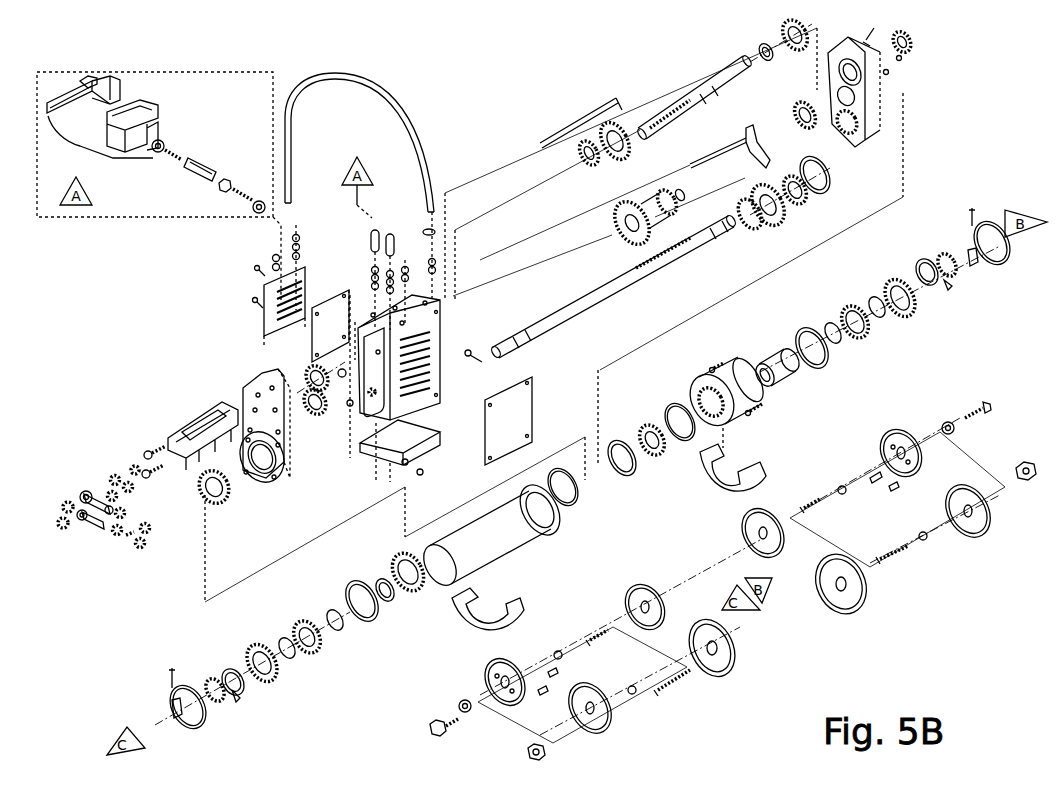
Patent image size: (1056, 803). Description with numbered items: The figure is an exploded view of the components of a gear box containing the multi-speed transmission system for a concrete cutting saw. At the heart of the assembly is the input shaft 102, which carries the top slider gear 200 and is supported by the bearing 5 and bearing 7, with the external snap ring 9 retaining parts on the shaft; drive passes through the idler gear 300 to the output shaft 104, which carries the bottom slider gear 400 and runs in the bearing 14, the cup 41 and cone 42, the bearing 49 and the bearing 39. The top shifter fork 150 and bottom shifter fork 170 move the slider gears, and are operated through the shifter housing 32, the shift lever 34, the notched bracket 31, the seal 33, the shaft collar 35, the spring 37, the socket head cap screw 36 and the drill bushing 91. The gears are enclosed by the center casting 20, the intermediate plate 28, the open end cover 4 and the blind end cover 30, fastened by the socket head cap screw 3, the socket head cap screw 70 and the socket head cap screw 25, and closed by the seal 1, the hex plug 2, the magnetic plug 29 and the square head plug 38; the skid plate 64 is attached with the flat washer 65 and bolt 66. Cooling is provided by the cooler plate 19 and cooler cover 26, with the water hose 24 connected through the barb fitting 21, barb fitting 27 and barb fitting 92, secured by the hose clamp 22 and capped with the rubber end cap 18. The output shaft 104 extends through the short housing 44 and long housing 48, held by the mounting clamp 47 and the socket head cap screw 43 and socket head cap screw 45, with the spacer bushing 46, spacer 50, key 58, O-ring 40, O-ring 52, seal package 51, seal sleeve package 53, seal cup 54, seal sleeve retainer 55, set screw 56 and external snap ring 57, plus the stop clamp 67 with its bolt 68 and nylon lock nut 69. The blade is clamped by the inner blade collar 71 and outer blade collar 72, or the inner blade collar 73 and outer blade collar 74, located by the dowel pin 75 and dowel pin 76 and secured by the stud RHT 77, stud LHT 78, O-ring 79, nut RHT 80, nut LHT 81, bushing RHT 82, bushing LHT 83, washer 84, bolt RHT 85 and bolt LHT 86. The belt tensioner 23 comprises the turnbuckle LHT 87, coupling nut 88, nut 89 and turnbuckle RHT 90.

The seal 1 is at (913, 46).
The hex plug 2 is at (902, 60).
The socket head cap screw 3 is at (868, 28).
The end cover (open) 4 is at (870, 142).
The bearing 5 is at (783, 28).
The bearing 7 is at (795, 116).
The external snap ring 9 is at (768, 62).
The bearing 14 is at (828, 182).
The rubber end cap 18 is at (372, 236).
The cooler plate 19 is at (493, 421).
The center casting 20 is at (452, 336).
The barb fitting 21 is at (288, 260).
The hose clamp 22 is at (425, 230).
The belt tensioner 23 is at (82, 146).
The water hose 24 is at (350, 82).
The socket head cap screw 25 is at (250, 270).
The cooler cover 26 is at (293, 326).
The barb fitting 27 is at (372, 272).
The intermediate plate 28 is at (342, 292).
The magnetic plug 29 is at (343, 380).
The end cover (blind) 30 is at (252, 384).
The notched bracket 31 is at (195, 412).
The shifter housing 32 is at (148, 449).
The seal 33 is at (132, 464).
The shift lever 34 is at (86, 490).
The shaft collar 35 is at (64, 500).
The socket head cap screw 36 is at (76, 536).
The spring 37 is at (122, 540).
The square head plug 38 is at (250, 484).
The bearing 39 is at (198, 487).
The O-ring 40 is at (569, 504).
The cup 41 is at (632, 476).
The cone 42 is at (660, 456).
The socket head cap screw 43 is at (710, 366).
The short housing 44 is at (740, 370).
The socket head cap screw 45 is at (762, 418).
The spacer bushing 46 is at (772, 362).
The mounting clamp 47 is at (478, 626).
The long housing 48 is at (494, 548).
The bearing 49 is at (420, 590).
The spacer 50 is at (390, 603).
The seal package 51 is at (372, 622).
The O-ring 52 is at (294, 658).
The seal sleeve package 53 is at (307, 618).
The seal cup 54 is at (262, 643).
The seal sleeve retainer 55 is at (234, 668).
The set screw 56 is at (238, 702).
The external snap ring 57 is at (214, 678).
The key 58 is at (475, 360).
The skid plate 64 is at (385, 460).
The flat washer 65 is at (410, 462).
The bolt 66 is at (424, 476).
The stop clamp 67 is at (188, 684).
The bolt 68 is at (968, 208).
The nylon lock nut 69 is at (973, 266).
The socket head cap screw 70 is at (890, 74).
The inner blade collar 71 is at (746, 540).
The outer blade collar 72 is at (895, 430).
The inner blade collar 73 is at (866, 586).
The outer blade collar 74 is at (955, 488).
The dowel pin 75 is at (894, 492).
The dowel pin 76 is at (876, 482).
The stud RHT 77 is at (882, 556).
The stud LHT 78 is at (676, 686).
The O-ring 79 is at (840, 484).
The nut RHT 80 is at (1025, 482).
The nut LHT 81 is at (526, 750).
The bushing RHT 82 is at (806, 500).
The bushing LHT 83 is at (594, 630).
The washer 84 is at (946, 420).
The bolt RHT 85 is at (975, 408).
The bolt LHT 86 is at (446, 734).
The turnbuckle LHT 87 is at (170, 142).
The coupling nut 88 is at (204, 162).
The nut 89 is at (231, 181).
The turnbuckle RHT 90 is at (232, 196).
The drill bushing 91 is at (352, 408).
The barb fitting 92 is at (440, 264).
The input shaft 102 is at (722, 64).
The output shaft 104 is at (606, 292).
The top shifter fork 150 is at (553, 130).
The bottom shifter fork 170 is at (733, 138).
The top slider gear 200 is at (606, 160).
The idler gear 300 is at (656, 196).
The bottom slider gear 400 is at (776, 216).